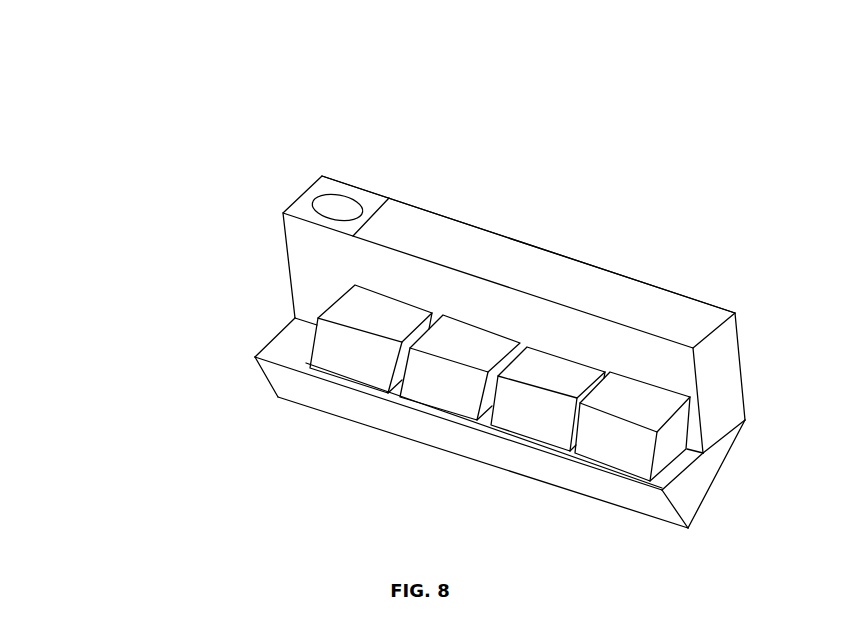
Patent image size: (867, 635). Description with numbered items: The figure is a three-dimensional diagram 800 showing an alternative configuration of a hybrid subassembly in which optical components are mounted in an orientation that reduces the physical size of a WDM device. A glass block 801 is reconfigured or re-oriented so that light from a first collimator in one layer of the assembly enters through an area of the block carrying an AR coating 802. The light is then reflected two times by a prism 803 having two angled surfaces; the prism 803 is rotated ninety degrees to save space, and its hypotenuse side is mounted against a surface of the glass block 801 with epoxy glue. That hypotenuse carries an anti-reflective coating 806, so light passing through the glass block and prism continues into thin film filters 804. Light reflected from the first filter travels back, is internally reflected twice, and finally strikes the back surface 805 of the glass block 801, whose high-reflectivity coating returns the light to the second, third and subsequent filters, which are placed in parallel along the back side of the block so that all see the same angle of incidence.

The 3D diagram 800 is at (196, 72).
The glass block 801 is at (742, 392).
The AR coating 802 is at (350, 202).
The prism 803 is at (642, 513).
The thin film filters 804 is at (313, 349).
The back surface 805 is at (692, 298).
The anti-reflective coating 806 is at (276, 338).